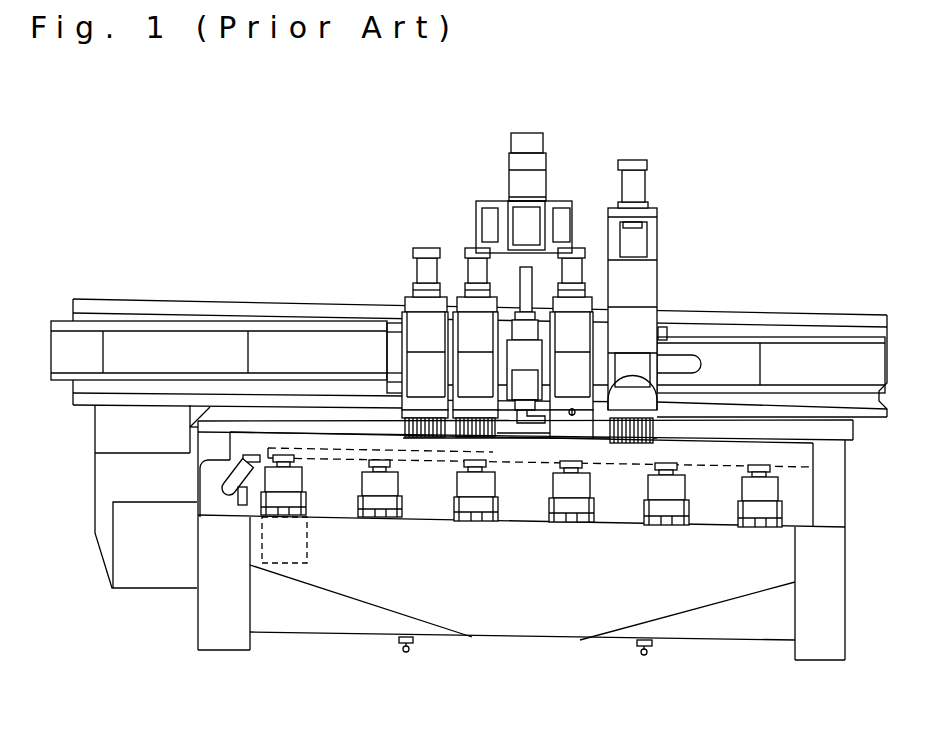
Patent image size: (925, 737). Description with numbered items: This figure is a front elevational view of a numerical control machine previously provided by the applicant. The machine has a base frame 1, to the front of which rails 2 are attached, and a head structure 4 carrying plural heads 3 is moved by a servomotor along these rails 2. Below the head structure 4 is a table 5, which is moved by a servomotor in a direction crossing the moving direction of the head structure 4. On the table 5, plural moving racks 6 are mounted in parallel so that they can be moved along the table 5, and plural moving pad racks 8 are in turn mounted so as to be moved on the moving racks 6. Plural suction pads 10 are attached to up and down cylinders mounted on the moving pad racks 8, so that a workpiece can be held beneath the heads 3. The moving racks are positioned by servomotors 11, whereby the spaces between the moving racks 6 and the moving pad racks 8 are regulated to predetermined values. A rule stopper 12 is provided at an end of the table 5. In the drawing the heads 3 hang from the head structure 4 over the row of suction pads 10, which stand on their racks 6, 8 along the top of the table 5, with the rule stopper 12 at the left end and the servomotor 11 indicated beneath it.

The base frame 1 is at (299, 305).
The rails 2 is at (227, 301).
The heads 3 is at (529, 301).
The head structure 4 is at (544, 195).
The table 5 is at (516, 608).
The moving racks 6 is at (524, 524).
The moving pad racks 8 is at (367, 523).
The suction pads 10 is at (713, 391).
The servomotors 11 is at (307, 555).
The rule stopper 12 is at (258, 455).